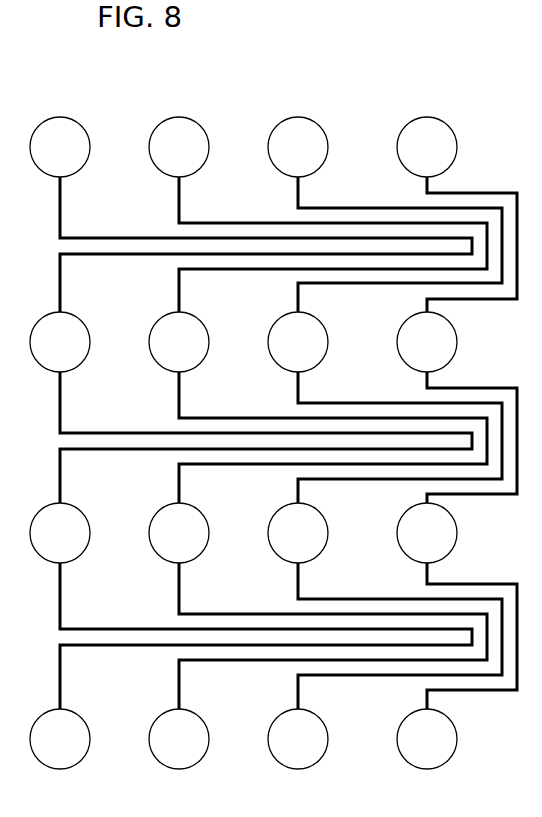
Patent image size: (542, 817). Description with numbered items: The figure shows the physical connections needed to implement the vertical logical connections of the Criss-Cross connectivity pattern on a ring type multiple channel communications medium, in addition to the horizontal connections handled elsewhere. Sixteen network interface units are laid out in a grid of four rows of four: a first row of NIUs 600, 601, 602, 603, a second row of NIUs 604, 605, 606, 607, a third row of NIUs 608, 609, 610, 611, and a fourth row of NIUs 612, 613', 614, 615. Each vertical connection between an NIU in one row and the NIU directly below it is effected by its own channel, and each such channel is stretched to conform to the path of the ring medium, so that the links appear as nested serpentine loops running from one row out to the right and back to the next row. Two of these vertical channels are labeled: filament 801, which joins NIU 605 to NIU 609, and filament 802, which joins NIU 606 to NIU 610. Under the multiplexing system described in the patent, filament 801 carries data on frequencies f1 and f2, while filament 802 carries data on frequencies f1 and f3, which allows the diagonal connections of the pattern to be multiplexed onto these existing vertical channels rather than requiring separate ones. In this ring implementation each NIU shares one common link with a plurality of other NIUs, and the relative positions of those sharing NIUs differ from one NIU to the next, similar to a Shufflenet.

The network interface unit 600 is at (60, 147).
The network interface unit 601 is at (179, 147).
The network interface unit 602 is at (298, 147).
The network interface unit 603 is at (427, 147).
The network interface unit 604 is at (60, 342).
The network interface unit 605 is at (179, 342).
The network interface unit 606 is at (298, 342).
The network interface unit 607 is at (427, 342).
The network interface unit 608 is at (60, 533).
The network interface unit 609 is at (179, 533).
The network interface unit 610 is at (298, 533).
The network interface unit 611 is at (427, 533).
The network interface unit 612 is at (60, 739).
The network interface unit 613' is at (179, 739).
The network interface unit 614 is at (298, 739).
The network interface unit 615 is at (427, 739).
The filament 801 is at (183, 415).
The filament 802 is at (338, 400).